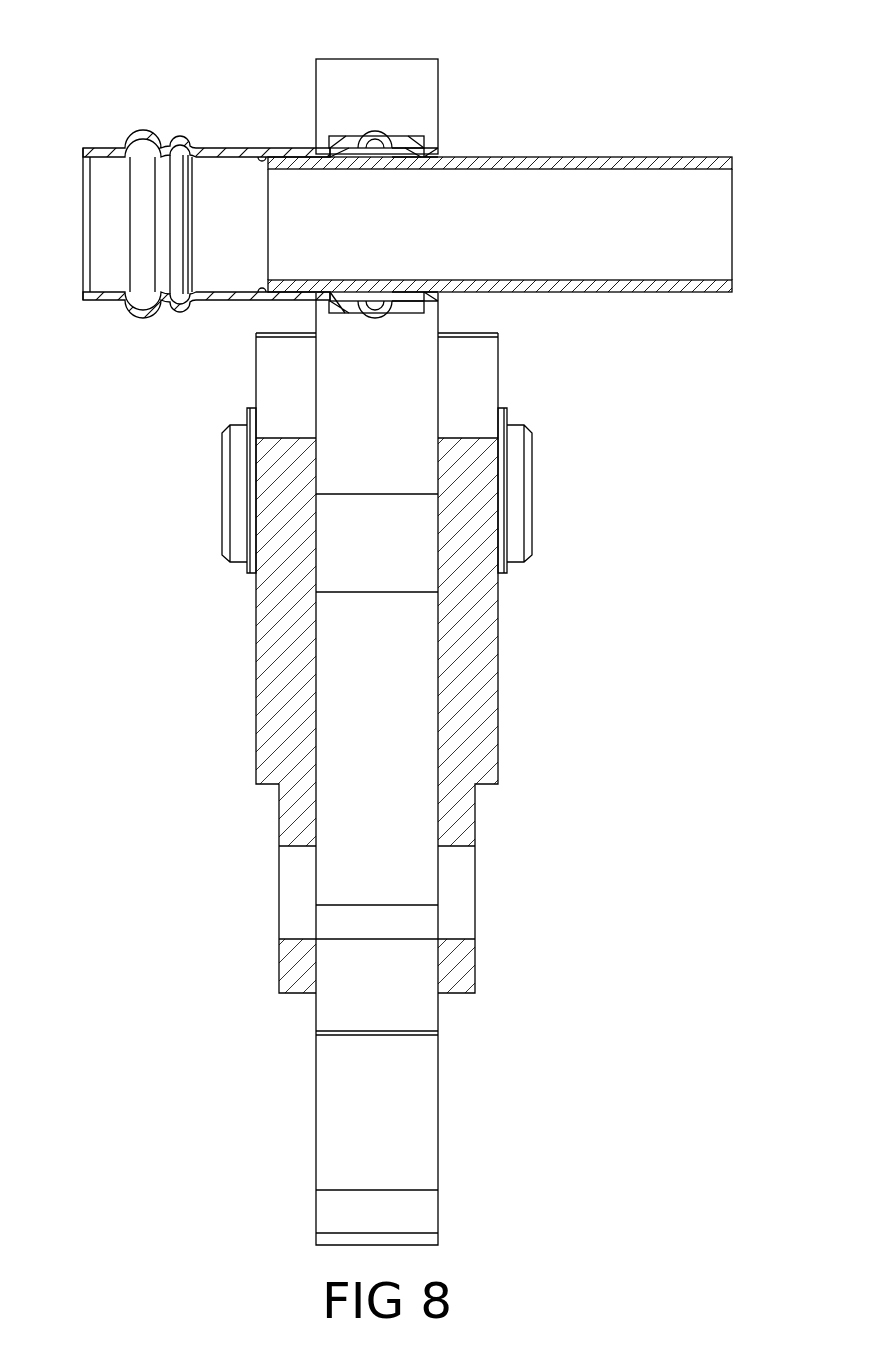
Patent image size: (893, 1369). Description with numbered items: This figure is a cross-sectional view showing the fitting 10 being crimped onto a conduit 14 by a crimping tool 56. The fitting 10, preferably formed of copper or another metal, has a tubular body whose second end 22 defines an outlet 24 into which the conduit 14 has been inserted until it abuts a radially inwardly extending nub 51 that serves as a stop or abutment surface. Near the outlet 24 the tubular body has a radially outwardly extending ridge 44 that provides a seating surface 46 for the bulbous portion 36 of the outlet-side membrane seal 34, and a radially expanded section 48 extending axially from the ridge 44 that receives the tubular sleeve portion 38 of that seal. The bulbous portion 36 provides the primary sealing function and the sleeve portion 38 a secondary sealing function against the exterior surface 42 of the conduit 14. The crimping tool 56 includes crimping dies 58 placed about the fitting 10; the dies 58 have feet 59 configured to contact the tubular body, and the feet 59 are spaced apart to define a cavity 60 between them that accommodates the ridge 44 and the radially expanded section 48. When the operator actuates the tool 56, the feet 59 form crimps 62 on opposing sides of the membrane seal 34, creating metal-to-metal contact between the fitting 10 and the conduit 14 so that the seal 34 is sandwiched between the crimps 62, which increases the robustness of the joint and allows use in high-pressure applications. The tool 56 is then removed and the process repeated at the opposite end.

The fitting 10 is at (208, 308).
The conduit 14 is at (638, 157).
The second end 22 is at (440, 152).
The outlet 24 is at (412, 150).
The outlet-side membrane seal 34 is at (358, 292).
The bulbous portion 36 is at (382, 300).
The tubular sleeve portion 38 is at (358, 160).
The exterior surface 42 is at (697, 293).
The radially outwardly extending ridge 44 is at (143, 130).
The seating surface 46 is at (145, 310).
The radially expanded section 48 is at (180, 141).
The radially inwardly extending nub 51 is at (262, 162).
The crimping tool 56 is at (440, 58).
The crimping die 58 is at (380, 76).
The foot 59 is at (328, 143).
The cavity 60 is at (346, 136).
The crimp 62 is at (330, 155).